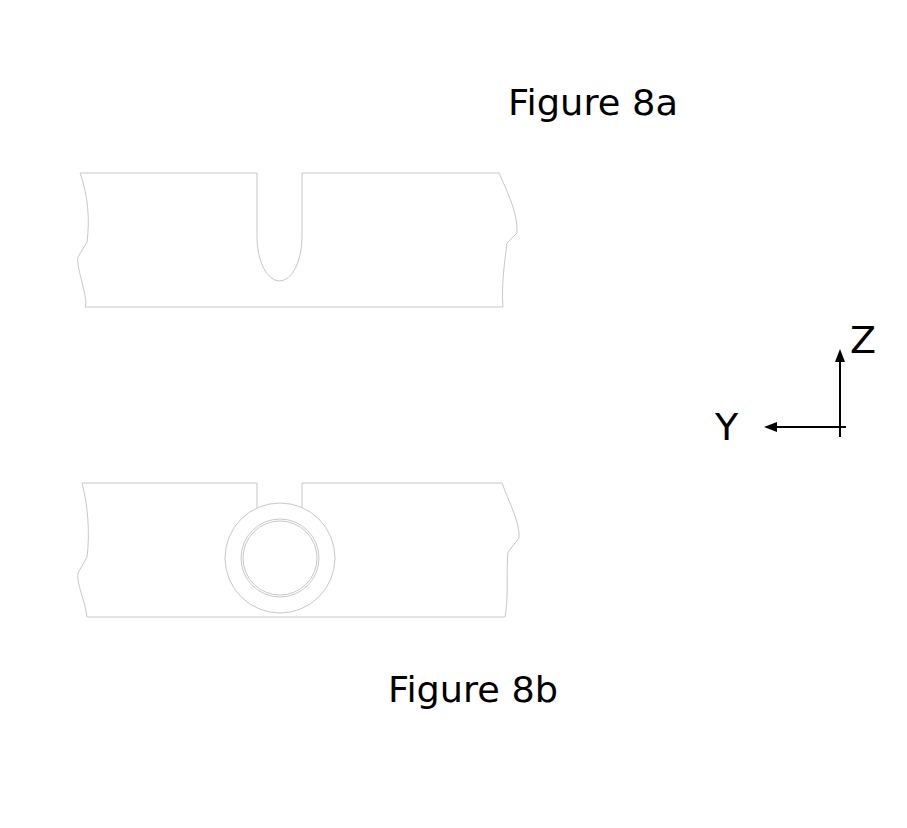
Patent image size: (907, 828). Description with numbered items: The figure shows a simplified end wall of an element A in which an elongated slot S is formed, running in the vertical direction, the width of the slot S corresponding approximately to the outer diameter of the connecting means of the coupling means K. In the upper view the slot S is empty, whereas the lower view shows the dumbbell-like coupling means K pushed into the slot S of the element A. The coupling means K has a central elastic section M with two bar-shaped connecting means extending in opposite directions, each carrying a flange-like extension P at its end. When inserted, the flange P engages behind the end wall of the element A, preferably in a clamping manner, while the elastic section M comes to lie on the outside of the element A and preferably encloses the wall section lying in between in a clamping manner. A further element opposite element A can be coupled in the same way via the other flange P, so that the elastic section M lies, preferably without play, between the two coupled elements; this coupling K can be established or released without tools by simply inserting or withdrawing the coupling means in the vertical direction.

In FIG. 8A, the slot S is at (280, 186).
In FIG. 8A, the element A is at (483, 266).
In FIG. 8B, the element A is at (452, 575).
In FIG. 8B, the flange-like extension P is at (300, 545).
In FIG. 8B, the elastic section M is at (292, 603).
In FIG. 8B, the coupling means K is at (201, 587).